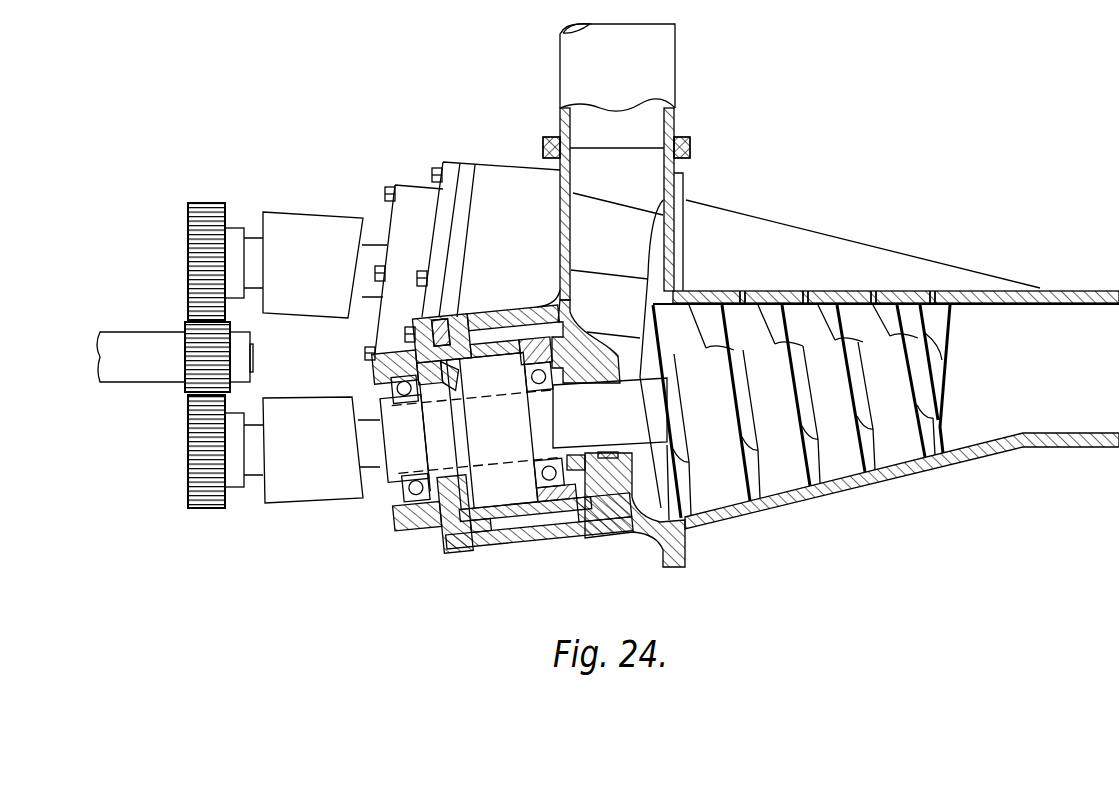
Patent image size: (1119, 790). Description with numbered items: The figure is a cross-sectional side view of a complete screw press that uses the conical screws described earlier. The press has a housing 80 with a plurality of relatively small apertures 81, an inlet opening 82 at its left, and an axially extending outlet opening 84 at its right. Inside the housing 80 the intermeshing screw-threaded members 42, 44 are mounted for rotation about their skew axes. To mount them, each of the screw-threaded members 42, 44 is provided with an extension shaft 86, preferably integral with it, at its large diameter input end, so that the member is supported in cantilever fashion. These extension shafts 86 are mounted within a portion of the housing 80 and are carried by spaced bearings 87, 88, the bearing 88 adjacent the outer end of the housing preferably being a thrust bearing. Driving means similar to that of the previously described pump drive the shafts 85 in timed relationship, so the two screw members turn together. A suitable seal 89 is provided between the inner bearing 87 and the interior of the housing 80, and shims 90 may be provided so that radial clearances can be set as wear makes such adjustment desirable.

The screw-threaded member 42 is at (907, 308).
The screw-threaded member 44 is at (943, 307).
The housing 80 is at (793, 503).
The apertures 81 is at (812, 293).
The inlet opening 82 is at (653, 132).
The outlet opening 84 is at (1067, 310).
The shafts 85 is at (190, 260).
The extension shafts 86 is at (622, 430).
The bearings 87 is at (549, 500).
The bearing 88 is at (444, 550).
The seal 89 is at (602, 505).
The shims 90 is at (471, 557).